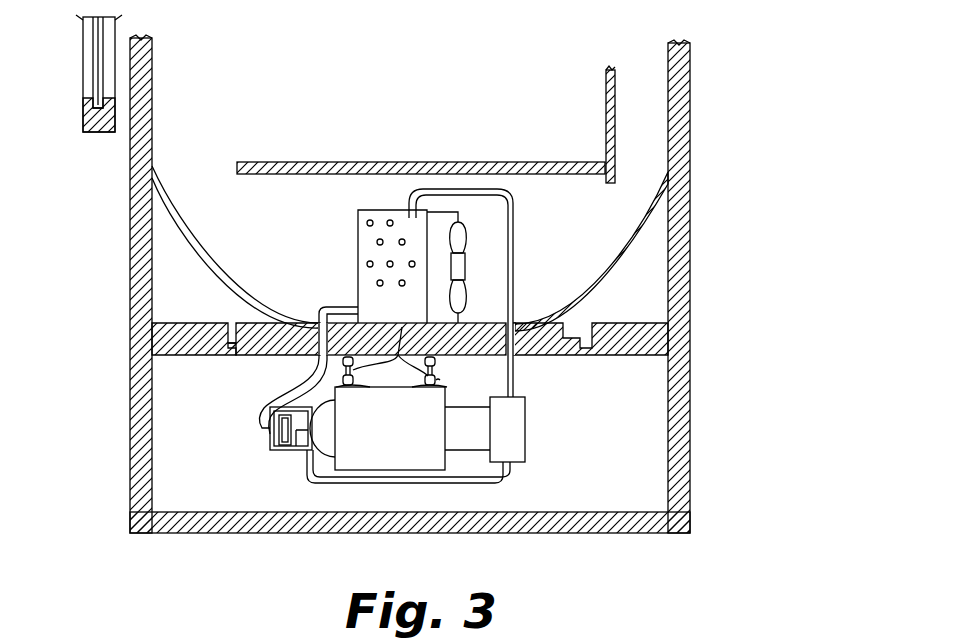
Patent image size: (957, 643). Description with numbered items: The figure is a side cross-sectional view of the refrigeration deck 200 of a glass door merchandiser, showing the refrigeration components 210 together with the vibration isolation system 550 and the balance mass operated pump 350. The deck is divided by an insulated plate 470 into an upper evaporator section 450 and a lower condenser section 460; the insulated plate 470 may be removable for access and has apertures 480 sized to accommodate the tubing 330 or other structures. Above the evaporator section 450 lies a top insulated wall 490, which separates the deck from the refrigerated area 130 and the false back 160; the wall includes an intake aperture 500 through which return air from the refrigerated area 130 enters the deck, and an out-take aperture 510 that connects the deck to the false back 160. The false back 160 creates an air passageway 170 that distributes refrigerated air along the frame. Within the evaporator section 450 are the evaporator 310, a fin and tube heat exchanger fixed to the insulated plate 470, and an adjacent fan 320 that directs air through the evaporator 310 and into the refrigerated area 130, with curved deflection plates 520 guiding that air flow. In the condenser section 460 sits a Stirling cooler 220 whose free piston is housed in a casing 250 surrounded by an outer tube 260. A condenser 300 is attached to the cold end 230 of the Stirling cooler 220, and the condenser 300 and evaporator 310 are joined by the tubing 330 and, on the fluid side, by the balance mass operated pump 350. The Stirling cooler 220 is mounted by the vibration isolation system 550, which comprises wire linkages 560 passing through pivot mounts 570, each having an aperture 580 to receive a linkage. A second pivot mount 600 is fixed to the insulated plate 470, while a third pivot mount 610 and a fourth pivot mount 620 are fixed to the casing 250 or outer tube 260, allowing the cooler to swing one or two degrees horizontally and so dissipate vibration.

The refrigerated area 130 is at (440, 83).
The false back 160 is at (608, 133).
The air passageway 170 is at (640, 80).
The refrigeration deck 200 is at (698, 178).
The refrigeration components 210 is at (521, 222).
The Stirling cooler 220 is at (383, 485).
The cold end 230 is at (536, 441).
The casing 250 is at (305, 477).
The outer tube 260 is at (415, 468).
The condenser 300 is at (527, 447).
The evaporator 310 is at (357, 225).
The fan 320 is at (461, 222).
The tubing 330 is at (413, 380).
The balance mass operated pump 350 is at (272, 453).
The evaporator section 450 is at (207, 215).
The condenser section 460 is at (152, 412).
The insulated plate 470 is at (568, 325).
The apertures 480 is at (316, 360).
The top insulated wall 490 is at (325, 161).
The intake aperture 500 is at (200, 157).
The out-take aperture 510 is at (645, 168).
The deflection plates 520 is at (411, 250).
The vibration isolation system 550 is at (446, 380).
The linkages 560 is at (402, 327).
The pivot mounts 570 is at (275, 350).
The aperture 580 is at (300, 378).
The second pivot mount 600 is at (517, 323).
The third pivot mount 610 is at (377, 387).
The fourth pivot mount 620 is at (410, 388).